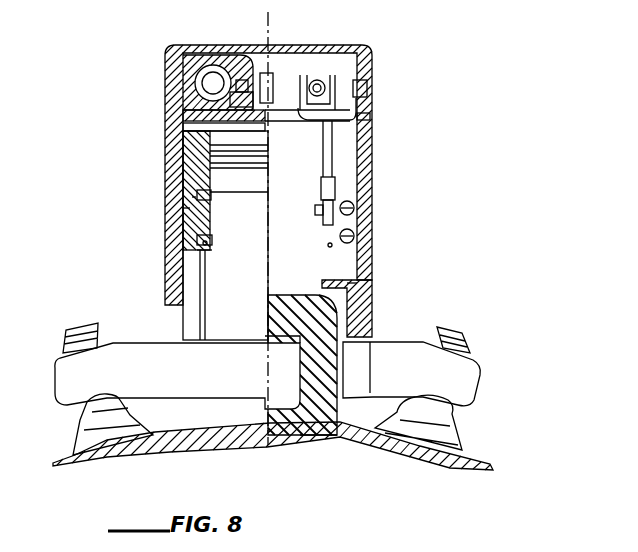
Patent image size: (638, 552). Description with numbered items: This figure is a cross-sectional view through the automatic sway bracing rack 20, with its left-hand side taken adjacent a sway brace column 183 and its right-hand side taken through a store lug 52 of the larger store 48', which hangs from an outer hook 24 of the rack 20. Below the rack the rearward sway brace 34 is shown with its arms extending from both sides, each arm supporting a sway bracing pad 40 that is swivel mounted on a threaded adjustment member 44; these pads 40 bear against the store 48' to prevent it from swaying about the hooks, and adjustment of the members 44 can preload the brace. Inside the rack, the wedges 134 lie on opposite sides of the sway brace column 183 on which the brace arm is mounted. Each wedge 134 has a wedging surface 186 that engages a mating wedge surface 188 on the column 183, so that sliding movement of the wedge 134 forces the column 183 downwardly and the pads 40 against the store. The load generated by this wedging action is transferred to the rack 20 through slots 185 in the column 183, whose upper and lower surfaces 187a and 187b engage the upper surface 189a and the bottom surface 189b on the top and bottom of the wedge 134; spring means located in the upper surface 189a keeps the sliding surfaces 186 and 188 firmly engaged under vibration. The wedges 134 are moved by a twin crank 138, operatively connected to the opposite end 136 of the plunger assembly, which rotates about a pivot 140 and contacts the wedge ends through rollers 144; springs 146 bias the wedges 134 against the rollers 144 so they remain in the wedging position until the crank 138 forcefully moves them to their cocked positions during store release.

The automatic sway bracing rack 20 is at (368, 42).
The outer hook 24 is at (277, 402).
The rearward sway brace 34 is at (115, 342).
The sway bracing pad 40 is at (80, 420).
The threaded adjustment member 44 is at (64, 345).
The larger store 48' is at (273, 461).
The store lug 52 is at (312, 430).
The wedge 134 is at (190, 222).
The opposite end of plunger assembly 136 is at (373, 66).
The twin crank 138 is at (374, 145).
The pivot 140 is at (362, 118).
The roller 144 is at (308, 160).
The spring 146 is at (356, 236).
The sway brace column 183 is at (268, 241).
The slot 185 is at (190, 208).
The wedging surface 186 is at (208, 252).
The upper surface of slot 187a is at (211, 194).
The lower surface of slot 187b is at (197, 248).
The mating wedge surface 188 is at (207, 244).
The upper surface of wedge 189a is at (190, 196).
The bottom surface of wedge 189b is at (203, 290).